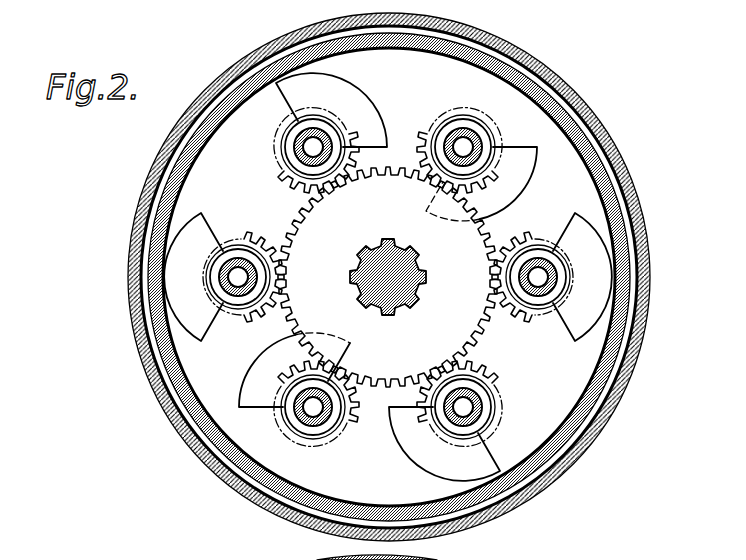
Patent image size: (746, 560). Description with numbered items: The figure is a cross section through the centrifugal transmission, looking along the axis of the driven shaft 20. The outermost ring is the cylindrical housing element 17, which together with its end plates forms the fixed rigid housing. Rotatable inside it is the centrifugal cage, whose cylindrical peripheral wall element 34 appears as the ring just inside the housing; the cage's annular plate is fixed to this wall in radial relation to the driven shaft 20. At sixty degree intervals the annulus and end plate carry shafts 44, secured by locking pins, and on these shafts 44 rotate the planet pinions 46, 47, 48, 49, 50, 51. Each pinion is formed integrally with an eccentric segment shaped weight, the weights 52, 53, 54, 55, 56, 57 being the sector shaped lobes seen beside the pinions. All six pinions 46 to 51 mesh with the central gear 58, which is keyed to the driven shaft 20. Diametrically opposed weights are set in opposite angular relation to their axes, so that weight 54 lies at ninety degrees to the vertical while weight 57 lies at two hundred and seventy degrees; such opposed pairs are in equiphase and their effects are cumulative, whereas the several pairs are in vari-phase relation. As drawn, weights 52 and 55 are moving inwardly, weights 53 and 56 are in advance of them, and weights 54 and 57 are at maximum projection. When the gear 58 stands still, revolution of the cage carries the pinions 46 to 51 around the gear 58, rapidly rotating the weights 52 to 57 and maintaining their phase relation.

The cylindrical housing element 17 is at (620, 375).
The driven shaft 20 is at (404, 292).
The cylindrical peripheral wall element 34 is at (283, 500).
The shafts 44 is at (278, 178).
The planet pinion 46 is at (262, 137).
The planet pinion 47 is at (482, 93).
The planet pinion 48 is at (552, 342).
The planet pinion 49 is at (518, 427).
The planet pinion 50 is at (333, 445).
The planet pinion 51 is at (230, 330).
The eccentric segment shaped weight 52 is at (357, 92).
The eccentric segment shaped weight 53 is at (518, 165).
The eccentric segment shaped weight 54 is at (605, 262).
The eccentric segment shaped weight 55 is at (468, 463).
The eccentric segment shaped weight 56 is at (250, 383).
The eccentric segment shaped weight 57 is at (173, 266).
The gear 58 is at (455, 333).